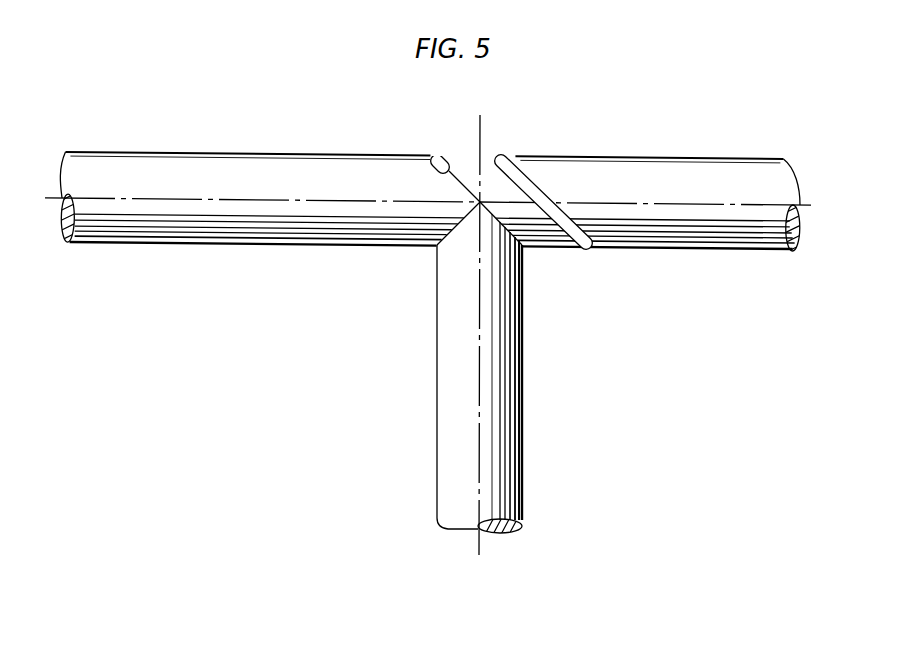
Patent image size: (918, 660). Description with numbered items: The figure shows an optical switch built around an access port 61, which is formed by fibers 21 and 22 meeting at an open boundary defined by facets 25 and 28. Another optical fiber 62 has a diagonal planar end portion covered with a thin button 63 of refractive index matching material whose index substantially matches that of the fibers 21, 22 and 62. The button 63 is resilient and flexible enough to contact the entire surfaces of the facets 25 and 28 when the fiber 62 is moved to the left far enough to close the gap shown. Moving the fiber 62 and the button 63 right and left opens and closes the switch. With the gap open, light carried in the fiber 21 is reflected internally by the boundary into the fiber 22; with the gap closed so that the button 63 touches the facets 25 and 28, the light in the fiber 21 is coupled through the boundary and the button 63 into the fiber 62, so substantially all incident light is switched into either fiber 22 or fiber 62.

The fiber 21 is at (185, 218).
The fiber 22 is at (455, 380).
The facet 25 is at (432, 156).
The facet 28 is at (507, 247).
The access port 61 is at (338, 313).
The optical fiber 62 is at (656, 172).
The button 63 is at (514, 168).